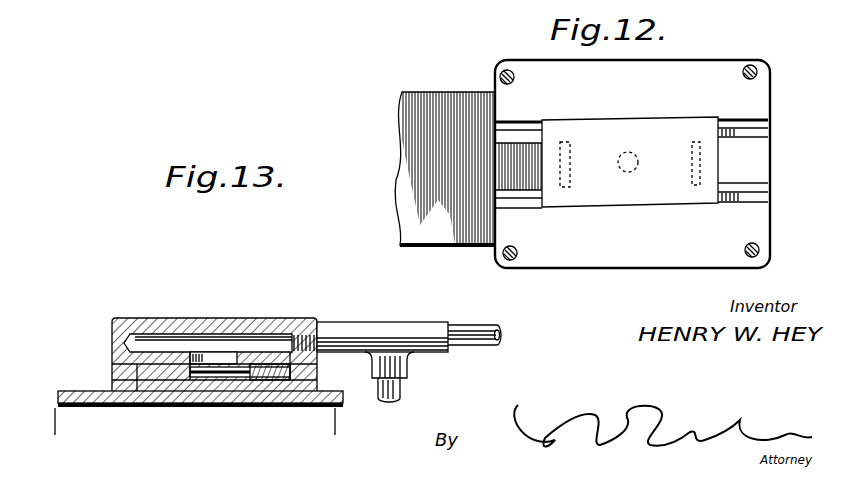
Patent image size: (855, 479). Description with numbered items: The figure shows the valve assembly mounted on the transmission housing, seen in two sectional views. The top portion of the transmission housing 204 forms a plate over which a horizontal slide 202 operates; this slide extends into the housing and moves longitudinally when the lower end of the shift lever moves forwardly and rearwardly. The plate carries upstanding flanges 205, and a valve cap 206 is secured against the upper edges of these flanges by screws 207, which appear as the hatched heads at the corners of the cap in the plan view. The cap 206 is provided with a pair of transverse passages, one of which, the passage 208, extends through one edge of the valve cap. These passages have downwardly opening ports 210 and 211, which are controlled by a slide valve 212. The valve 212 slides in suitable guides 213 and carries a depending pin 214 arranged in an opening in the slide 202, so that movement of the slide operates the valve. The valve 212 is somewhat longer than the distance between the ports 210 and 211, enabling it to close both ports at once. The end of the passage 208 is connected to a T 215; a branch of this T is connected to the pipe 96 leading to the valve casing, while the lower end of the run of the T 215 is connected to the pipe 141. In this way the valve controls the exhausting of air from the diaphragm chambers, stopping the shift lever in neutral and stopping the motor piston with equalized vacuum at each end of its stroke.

In FIG. 13, the pipe 96 is at (402, 389).
In FIG. 13, the pipe 141 is at (481, 326).
In FIG. 13, the horizontal slide 202 is at (183, 400).
In FIG. 13, the top portion of the transmission housing 204 is at (277, 405).
In FIG. 13, the upstanding flanges 205 is at (112, 376).
In FIG. 13, the valve cap 206 is at (136, 318).
In FIG. 12, the screws 207 is at (515, 50).
In FIG. 13, the transverse passage 208 is at (238, 330).
In FIG. 12, the port 210 is at (575, 150).
In FIG. 13, the port 210 is at (200, 353).
In FIG. 12, the port 211 is at (692, 181).
In FIG. 12, the slide valve 212 is at (621, 135).
In FIG. 13, the slide valve 212 is at (163, 385).
In FIG. 12, the guides 213 is at (518, 127).
In FIG. 13, the guides 213 is at (152, 405).
In FIG. 12, the depending pin 214 is at (637, 157).
In FIG. 13, the depending pin 214 is at (230, 408).
In FIG. 13, the T 215 is at (364, 328).